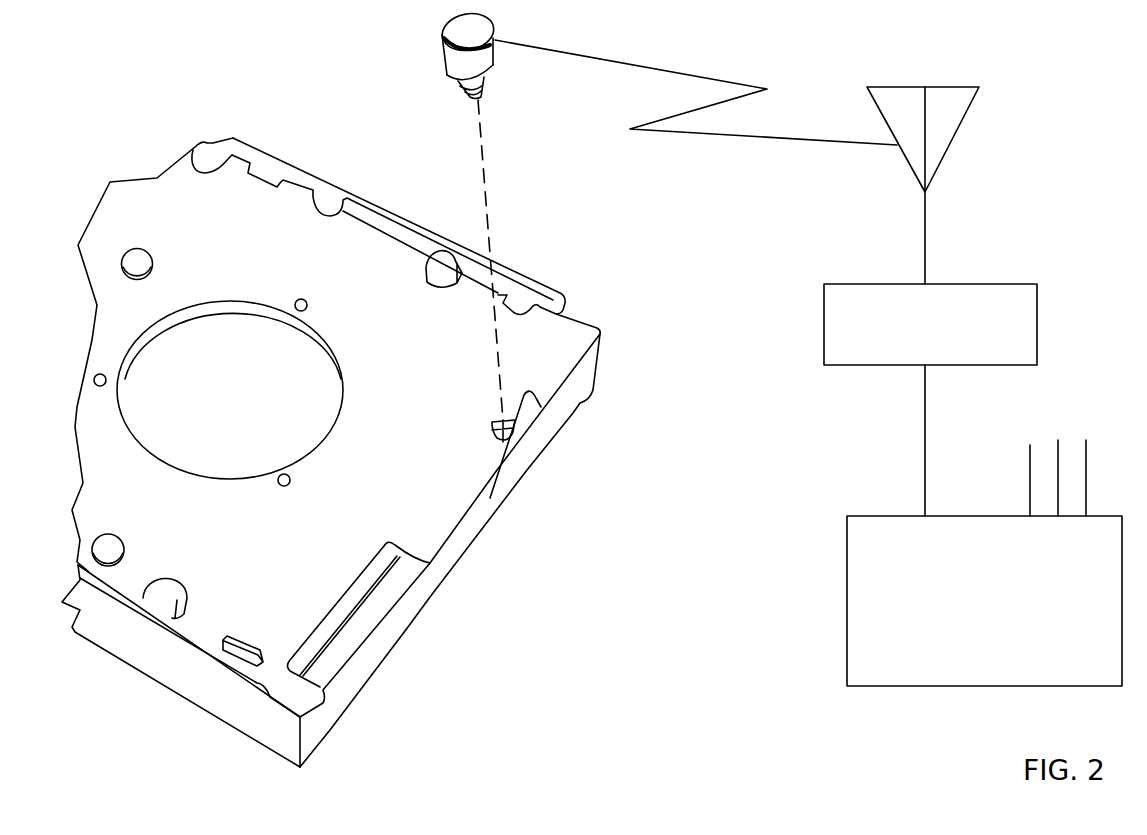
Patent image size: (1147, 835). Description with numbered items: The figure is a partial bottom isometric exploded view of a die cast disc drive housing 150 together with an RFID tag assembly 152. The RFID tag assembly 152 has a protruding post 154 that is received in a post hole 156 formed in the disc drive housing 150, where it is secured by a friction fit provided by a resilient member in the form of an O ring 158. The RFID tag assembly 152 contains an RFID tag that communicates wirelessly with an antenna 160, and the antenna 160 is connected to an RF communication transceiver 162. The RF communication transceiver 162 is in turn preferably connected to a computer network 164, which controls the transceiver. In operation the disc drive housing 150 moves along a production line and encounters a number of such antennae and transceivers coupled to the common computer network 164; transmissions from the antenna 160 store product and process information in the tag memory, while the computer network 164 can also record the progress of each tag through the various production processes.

The disc drive housing 150 is at (278, 155).
The RFID tag assembly 152 is at (438, 14).
The protruding post 154 is at (477, 102).
The post hole 156 is at (541, 407).
The O ring 158 is at (483, 88).
The antenna 160 is at (910, 167).
The RF communication transceiver 162 is at (824, 330).
The computer network 164 is at (847, 593).